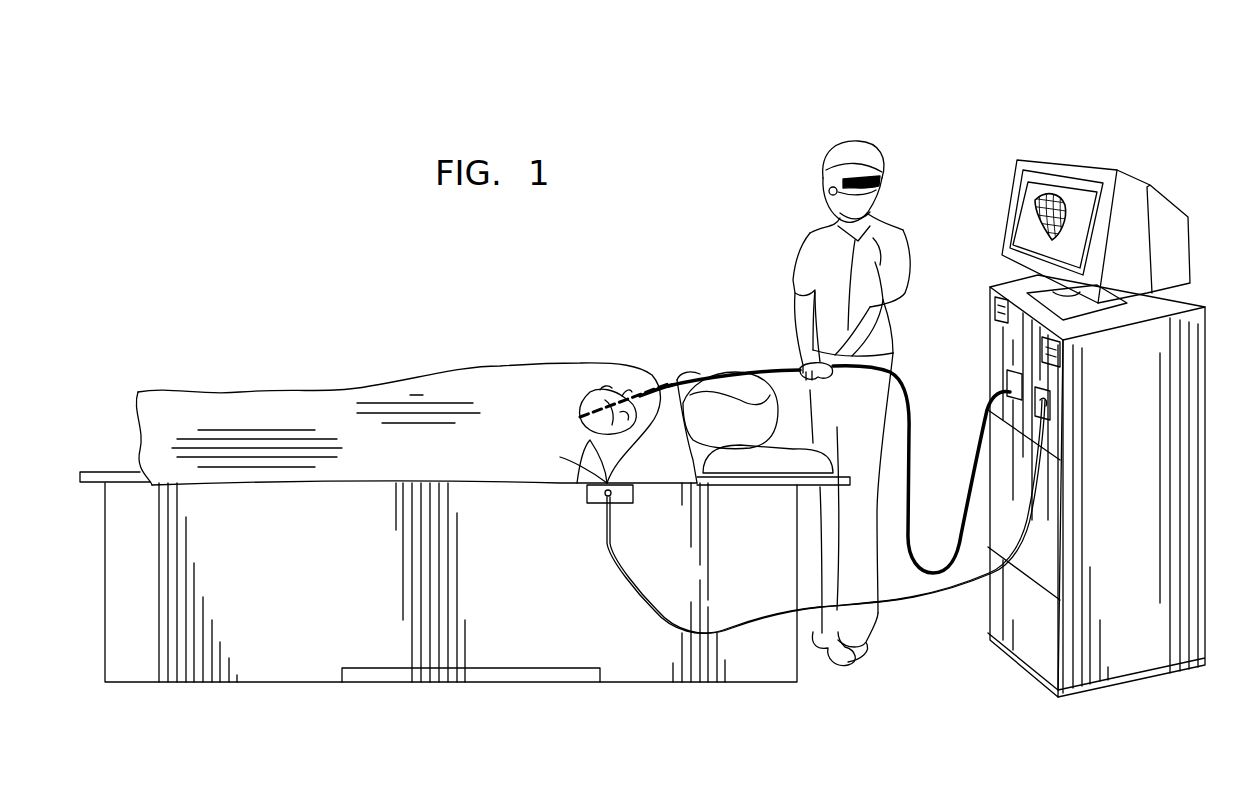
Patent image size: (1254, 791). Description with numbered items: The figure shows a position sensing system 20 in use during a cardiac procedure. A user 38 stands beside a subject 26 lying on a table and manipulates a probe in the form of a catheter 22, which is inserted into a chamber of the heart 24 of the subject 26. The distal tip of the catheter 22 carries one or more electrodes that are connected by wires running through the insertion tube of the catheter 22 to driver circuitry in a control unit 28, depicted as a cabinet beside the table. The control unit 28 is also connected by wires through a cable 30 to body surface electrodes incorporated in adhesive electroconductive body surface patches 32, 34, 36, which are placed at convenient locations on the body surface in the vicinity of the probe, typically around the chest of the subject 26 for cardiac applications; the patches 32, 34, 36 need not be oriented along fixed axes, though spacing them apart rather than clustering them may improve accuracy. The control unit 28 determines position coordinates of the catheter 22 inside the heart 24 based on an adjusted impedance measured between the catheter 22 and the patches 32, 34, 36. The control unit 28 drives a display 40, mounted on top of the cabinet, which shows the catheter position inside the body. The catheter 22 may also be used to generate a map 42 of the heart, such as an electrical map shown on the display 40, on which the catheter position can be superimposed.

The position sensing system 20 is at (1135, 50).
The catheter 22 is at (573, 413).
The heart 24 is at (597, 390).
The subject 26 is at (768, 475).
The control unit 28 is at (1057, 387).
The cable 30 is at (613, 540).
The body surface patch 32 is at (652, 387).
The body surface patch 34 is at (587, 488).
The body surface patch 36 is at (573, 470).
The user 38 is at (822, 267).
The display 40 is at (1070, 167).
The map 42 is at (1033, 202).